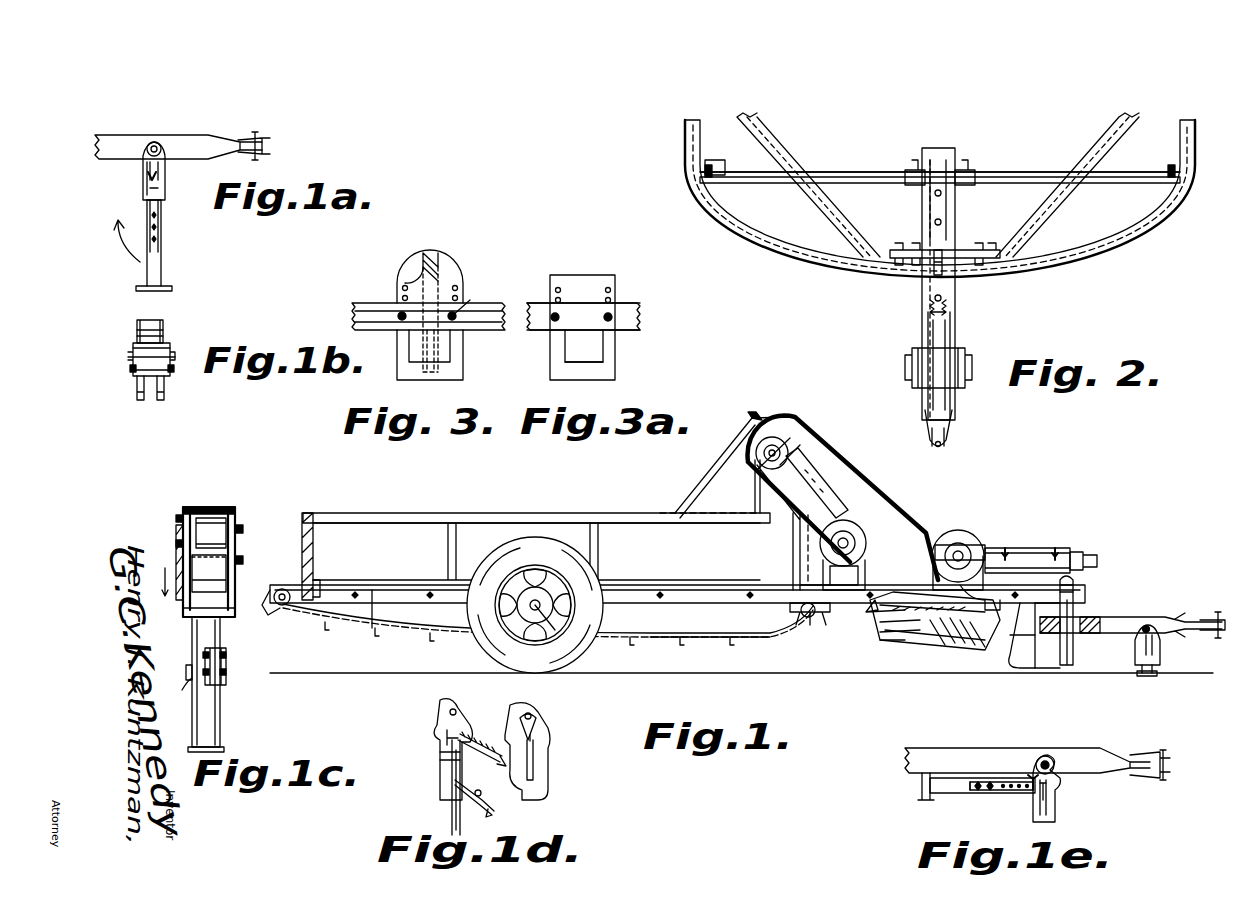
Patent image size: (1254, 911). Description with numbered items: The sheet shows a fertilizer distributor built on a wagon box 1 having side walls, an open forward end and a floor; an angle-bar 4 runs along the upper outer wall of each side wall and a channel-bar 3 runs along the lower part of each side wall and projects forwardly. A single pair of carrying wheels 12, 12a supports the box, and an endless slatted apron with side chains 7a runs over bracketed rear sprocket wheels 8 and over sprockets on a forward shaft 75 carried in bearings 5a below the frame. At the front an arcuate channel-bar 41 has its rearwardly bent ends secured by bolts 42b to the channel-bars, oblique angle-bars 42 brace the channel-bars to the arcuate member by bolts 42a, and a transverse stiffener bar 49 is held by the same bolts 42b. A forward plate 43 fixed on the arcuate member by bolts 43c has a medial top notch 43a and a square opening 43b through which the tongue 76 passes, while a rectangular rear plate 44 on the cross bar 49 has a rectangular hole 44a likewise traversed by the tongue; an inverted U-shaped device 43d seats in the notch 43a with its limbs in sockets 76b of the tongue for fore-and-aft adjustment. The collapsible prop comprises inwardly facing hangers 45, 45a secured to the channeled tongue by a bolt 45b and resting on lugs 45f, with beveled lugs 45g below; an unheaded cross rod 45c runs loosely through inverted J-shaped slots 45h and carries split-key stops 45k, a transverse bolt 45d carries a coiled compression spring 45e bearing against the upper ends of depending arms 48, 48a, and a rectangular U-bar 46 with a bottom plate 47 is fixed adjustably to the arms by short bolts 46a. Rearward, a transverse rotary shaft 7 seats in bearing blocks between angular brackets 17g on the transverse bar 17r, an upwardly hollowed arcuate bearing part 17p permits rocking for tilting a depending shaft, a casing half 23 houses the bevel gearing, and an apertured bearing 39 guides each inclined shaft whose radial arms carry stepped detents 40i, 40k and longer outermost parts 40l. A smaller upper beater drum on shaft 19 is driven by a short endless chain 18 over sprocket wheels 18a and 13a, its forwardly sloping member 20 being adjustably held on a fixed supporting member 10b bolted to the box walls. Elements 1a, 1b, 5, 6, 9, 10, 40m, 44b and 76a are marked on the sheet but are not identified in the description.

In FIG. 1, the wagon box 1 is at (325, 580).
In FIG. 1, the front end wall 1a is at (302, 515).
In FIG. 1, the body bottom corner 1b is at (316, 582).
In FIG. 1, the channel-bar 3 is at (368, 625).
In FIG. 1, the angle-bar 4 is at (338, 514).
In FIG. 1, the main frame beam 5 is at (318, 590).
In FIG. 1, the bearings 5a is at (790, 608).
In FIG. 1, the front pivot 6 is at (281, 589).
In FIG. 1, the transverse rotary shaft 7 is at (975, 548).
In FIG. 1, the side chain 7a is at (708, 643).
In FIG. 1, the bracketed sprocket wheel 8 is at (272, 588).
In FIG. 1, the brace strut 9 is at (378, 630).
In FIG. 1, the lower pivot 10 is at (850, 540).
In FIG. 1, the supporting member 10b is at (755, 485).
In FIG. 1, the carrying wheel 12 is at (480, 642).
In FIG. 1, the carrying wheel 12a is at (555, 630).
In FIG. 1, the sprocket wheel 13a is at (855, 478).
In FIG. 1, the angular bracket 17g is at (945, 545).
In FIG. 1, the arcuate bearing part 17p is at (990, 560).
In FIG. 1, the transverse bar 17r is at (965, 605).
In FIG. 1, the endless chain 18 is at (771, 437).
In FIG. 1, the sprocket wheel 18a is at (798, 440).
In FIG. 1, the shaft 19 is at (758, 445).
In FIG. 1, the forwardly sloping member 20 is at (812, 468).
In FIG. 1, the casing half 23 is at (960, 530).
In FIG. 1, the apertured bearing 39 is at (960, 636).
In FIG. 1, the detent 40i is at (895, 630).
In FIG. 1, the detent 40k is at (870, 615).
In FIG. 1, the outermost arm part 40l is at (885, 640).
In FIG. 1, the housing 40m is at (925, 605).
In FIG. 3, the arcuate channel-bar 41 is at (370, 303).
In FIG. 3A, the arcuate channel-bar 41 is at (583, 316).
In FIG. 2, the arcuate channel-bar 41 is at (796, 252).
In FIG. 1, the arcuate channel-bar 41 is at (1040, 612).
In FIG. 2, the oblique angle-bar 42 is at (830, 213).
In FIG. 2, the bolt 42a is at (898, 250).
In FIG. 2, the bolt 42b is at (726, 172).
In FIG. 3, the forward plate 43 is at (455, 275).
In FIG. 2, the forward plate 43 is at (948, 258).
In FIG. 1, the forward plate 43 is at (1063, 622).
In FIG. 3, the medial top notch 43a is at (405, 275).
In FIG. 3, the square opening 43b is at (430, 260).
In FIG. 3, the bolt 43c is at (470, 300).
In FIG. 1, the inverted U-shaped device 43d is at (1075, 584).
In FIG. 3A, the rear plate 44 is at (595, 280).
In FIG. 2, the rear plate 44 is at (968, 178).
In FIG. 1, the rear plate 44 is at (1020, 655).
In FIG. 3A, the rectangular hole 44a is at (598, 348).
In FIG. 2, the rectangular hole 44a is at (968, 182).
In FIG. 3A, the bar bolt 44b is at (612, 312).
In FIG. 1A, the hanger 45 is at (166, 175).
In FIG. 1B, the hanger 45 is at (166, 336).
In FIG. 2, the hanger 45 is at (930, 272).
In FIG. 1C, the hanger 45 is at (232, 522).
In FIG. 1, the hanger 45 is at (1134, 636).
In FIG. 1D, the hanger 45 is at (550, 728).
In FIG. 1E, the hanger 45 is at (1060, 790).
In FIG. 1C, the hanger 45a is at (186, 505).
In FIG. 1D, the hanger 45a is at (438, 723).
In FIG. 1A, the bolt 45b is at (150, 143).
In FIG. 1B, the bolt 45b is at (135, 336).
In FIG. 1C, the bolt 45b is at (180, 516).
In FIG. 1E, the bolt 45b is at (1050, 758).
In FIG. 1A, the cross rod 45c is at (145, 195).
In FIG. 1B, the cross rod 45c is at (130, 356).
In FIG. 1C, the cross rod 45c is at (205, 557).
In FIG. 1D, the cross rod 45c is at (494, 812).
In FIG. 1E, the cross rod 45c is at (1033, 772).
In FIG. 1C, the transverse bolt 45d is at (244, 560).
In FIG. 1B, the coiled compression spring 45e is at (130, 368).
In FIG. 1C, the coiled compression spring 45e is at (226, 614).
In FIG. 1D, the coiled compression spring 45e is at (484, 740).
In FIG. 1C, the lug 45f is at (176, 565).
In FIG. 1B, the lug 45g is at (164, 392).
In FIG. 1D, the lug 45g is at (445, 766).
In FIG. 1A, the side slot 45h is at (143, 176).
In FIG. 1D, the side slot 45h is at (445, 748).
In FIG. 1E, the side slot 45h is at (1038, 800).
In FIG. 1C, the split-key stop 45k is at (192, 680).
In FIG. 1A, the U-bar 46 is at (162, 252).
In FIG. 1C, the U-bar 46 is at (220, 710).
In FIG. 1, the U-bar 46 is at (1142, 668).
In FIG. 1E, the U-bar 46 is at (945, 795).
In FIG. 1A, the short bolt 46a is at (160, 232).
In FIG. 1C, the short bolt 46a is at (190, 665).
In FIG. 1E, the short bolt 46a is at (975, 792).
In FIG. 1A, the bottom plate 47 is at (172, 288).
In FIG. 1C, the bottom plate 47 is at (224, 749).
In FIG. 1E, the bottom plate 47 is at (920, 798).
In FIG. 1A, the depending arm 48 is at (160, 205).
In FIG. 1C, the depending arm 48 is at (222, 670).
In FIG. 1D, the depending arm 48 is at (452, 810).
In FIG. 1E, the depending arm 48 is at (995, 792).
In FIG. 1C, the leg part 48a is at (220, 617).
In FIG. 3A, the transverse stiffener bar 49 is at (583, 316).
In FIG. 2, the transverse stiffener bar 49 is at (775, 180).
In FIG. 1, the shaft 75 is at (815, 612).
In FIG. 1A, the tongue 76 is at (200, 134).
In FIG. 1B, the tongue 76 is at (140, 322).
In FIG. 2, the tongue 76 is at (951, 390).
In FIG. 1C, the tongue 76 is at (230, 512).
In FIG. 1, the tongue 76 is at (1148, 616).
In FIG. 1E, the tongue 76 is at (1027, 761).
In FIG. 1A, the clevis 76a is at (245, 138).
In FIG. 2, the clevis 76a is at (955, 420).
In FIG. 1, the clevis 76a is at (1210, 618).
In FIG. 1E, the clevis 76a is at (1135, 755).
In FIG. 2, the socket 76b is at (945, 300).
In FIG. 1, the socket 76b is at (1085, 616).